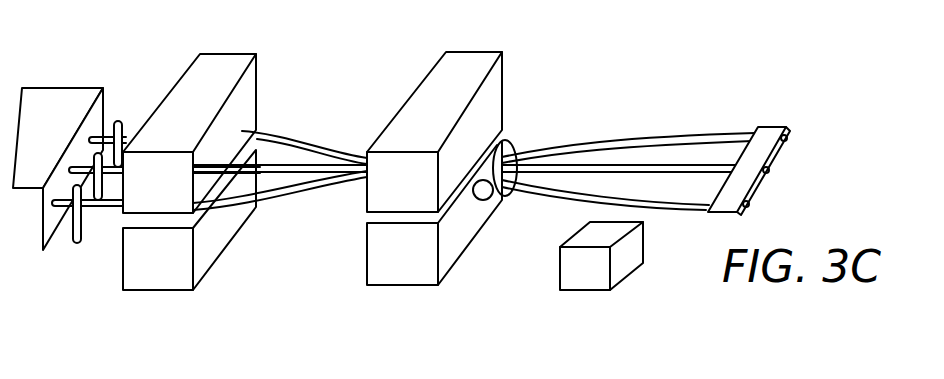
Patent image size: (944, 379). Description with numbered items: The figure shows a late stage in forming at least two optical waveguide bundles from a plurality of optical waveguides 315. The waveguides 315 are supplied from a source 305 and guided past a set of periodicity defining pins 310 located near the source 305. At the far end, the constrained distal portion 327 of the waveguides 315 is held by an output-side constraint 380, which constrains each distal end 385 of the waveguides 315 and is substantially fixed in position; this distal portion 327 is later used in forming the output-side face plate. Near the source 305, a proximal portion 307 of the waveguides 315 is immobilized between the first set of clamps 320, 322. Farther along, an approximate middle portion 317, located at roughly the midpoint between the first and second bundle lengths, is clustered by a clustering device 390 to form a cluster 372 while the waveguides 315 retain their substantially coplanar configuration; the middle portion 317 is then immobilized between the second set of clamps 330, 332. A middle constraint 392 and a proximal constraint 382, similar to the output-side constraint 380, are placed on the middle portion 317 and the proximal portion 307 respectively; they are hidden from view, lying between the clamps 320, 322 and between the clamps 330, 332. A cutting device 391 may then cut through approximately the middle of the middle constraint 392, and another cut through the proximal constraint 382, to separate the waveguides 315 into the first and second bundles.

The source 305 is at (53, 88).
The proximal portion 307 is at (230, 186).
The periodicity defining pins 310 is at (76, 247).
The optical waveguides 315 is at (622, 137).
The middle portion 317 is at (475, 183).
The first clamp 320 is at (256, 72).
The first clamp 322 is at (207, 267).
The distal portion 327 is at (782, 121).
The second clamp 330 is at (503, 72).
The second clamp 332 is at (450, 268).
The cluster 372 is at (482, 199).
The output-side constraint 380 is at (775, 125).
The proximal constraint 382 is at (160, 220).
The distal end 385 is at (773, 167).
The clustering device 390 is at (505, 141).
The cutting device 391 is at (594, 274).
The middle constraint 392 is at (408, 220).